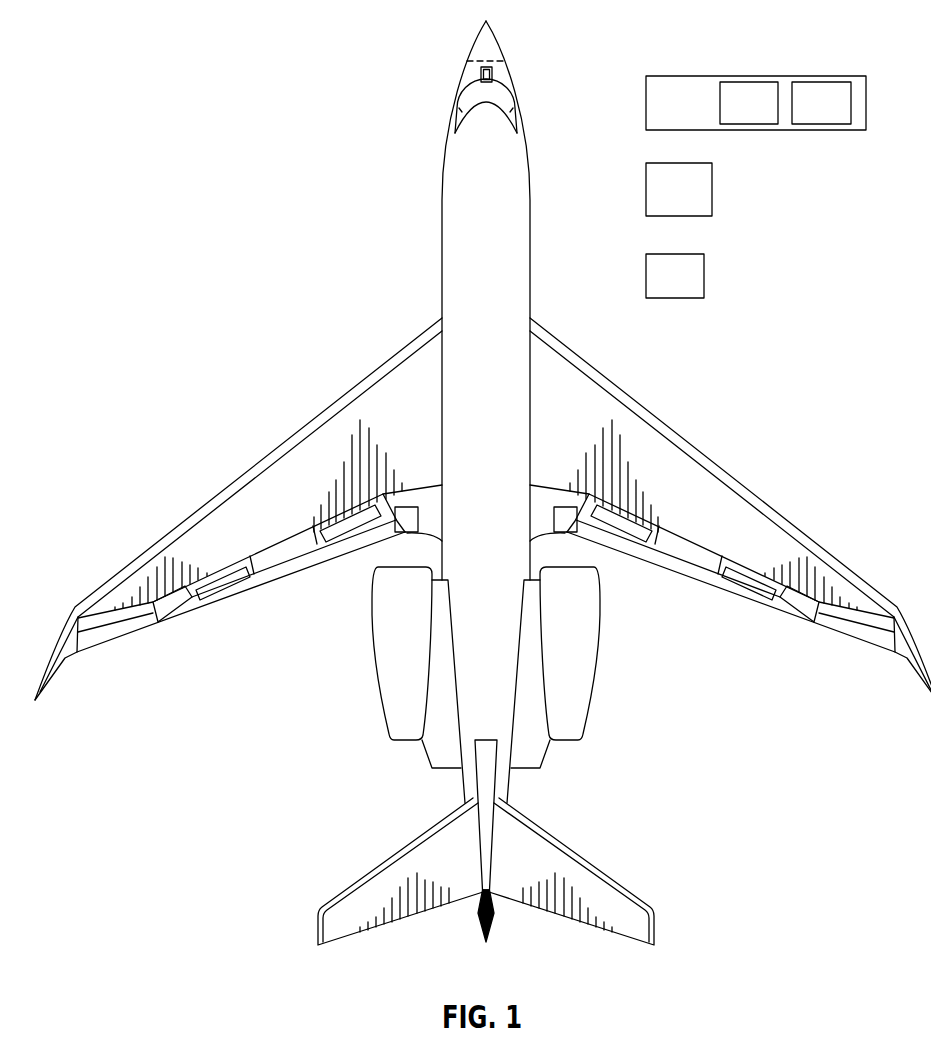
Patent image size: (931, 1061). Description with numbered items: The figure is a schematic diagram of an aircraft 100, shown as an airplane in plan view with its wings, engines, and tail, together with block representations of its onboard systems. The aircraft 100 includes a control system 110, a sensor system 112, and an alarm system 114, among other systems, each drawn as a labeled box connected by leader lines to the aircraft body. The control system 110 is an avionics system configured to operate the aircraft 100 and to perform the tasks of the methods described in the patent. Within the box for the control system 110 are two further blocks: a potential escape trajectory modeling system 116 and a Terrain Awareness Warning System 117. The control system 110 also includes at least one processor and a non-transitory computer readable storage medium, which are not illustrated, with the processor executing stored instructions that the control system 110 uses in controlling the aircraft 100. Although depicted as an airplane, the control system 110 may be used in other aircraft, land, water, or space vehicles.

The aircraft 100 is at (229, 341).
The control system 110 is at (488, 190).
The sensor system 112 is at (488, 190).
The alarm system 114 is at (488, 190).
The potential escape trajectory modeling system 116 is at (771, 116).
The Terrain Awareness Warning System (TAWS) 117 is at (843, 116).